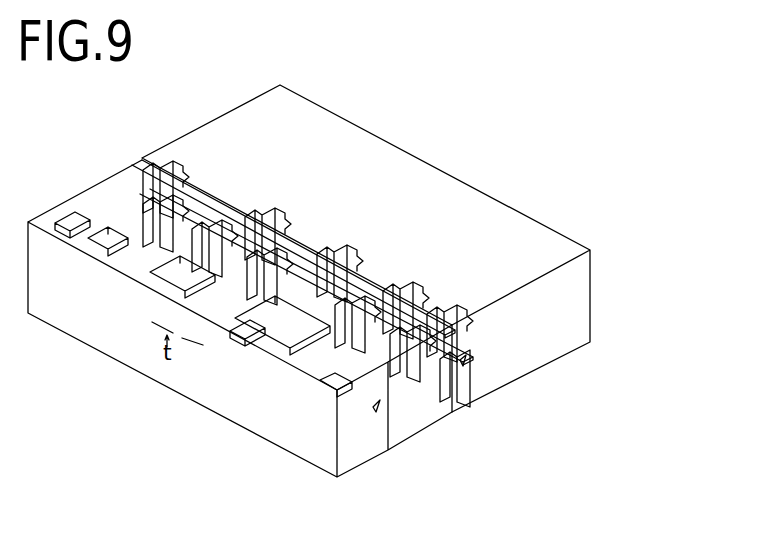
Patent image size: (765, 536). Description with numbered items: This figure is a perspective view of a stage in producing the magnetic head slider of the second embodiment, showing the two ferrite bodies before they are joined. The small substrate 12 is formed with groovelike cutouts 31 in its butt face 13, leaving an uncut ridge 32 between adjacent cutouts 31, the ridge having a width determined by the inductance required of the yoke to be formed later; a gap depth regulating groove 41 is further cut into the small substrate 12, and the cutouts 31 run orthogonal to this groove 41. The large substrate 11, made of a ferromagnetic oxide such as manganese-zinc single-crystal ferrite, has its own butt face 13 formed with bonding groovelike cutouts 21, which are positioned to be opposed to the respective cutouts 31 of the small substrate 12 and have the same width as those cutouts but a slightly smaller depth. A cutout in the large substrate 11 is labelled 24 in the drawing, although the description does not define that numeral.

The large substrate 11 is at (550, 342).
The small substrate 12 is at (223, 407).
The butt face 13 is at (308, 332).
The bonding groovelike cutouts 21 is at (325, 292).
The carrier tab 24 is at (422, 300).
The groovelike cutouts 31 is at (77, 212).
The ridge 32 is at (110, 218).
The gap depth regulating groove 41 is at (373, 407).